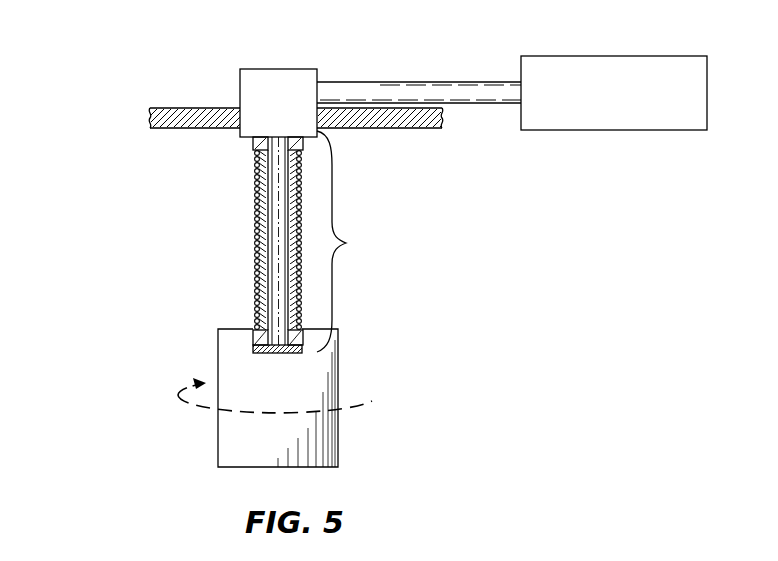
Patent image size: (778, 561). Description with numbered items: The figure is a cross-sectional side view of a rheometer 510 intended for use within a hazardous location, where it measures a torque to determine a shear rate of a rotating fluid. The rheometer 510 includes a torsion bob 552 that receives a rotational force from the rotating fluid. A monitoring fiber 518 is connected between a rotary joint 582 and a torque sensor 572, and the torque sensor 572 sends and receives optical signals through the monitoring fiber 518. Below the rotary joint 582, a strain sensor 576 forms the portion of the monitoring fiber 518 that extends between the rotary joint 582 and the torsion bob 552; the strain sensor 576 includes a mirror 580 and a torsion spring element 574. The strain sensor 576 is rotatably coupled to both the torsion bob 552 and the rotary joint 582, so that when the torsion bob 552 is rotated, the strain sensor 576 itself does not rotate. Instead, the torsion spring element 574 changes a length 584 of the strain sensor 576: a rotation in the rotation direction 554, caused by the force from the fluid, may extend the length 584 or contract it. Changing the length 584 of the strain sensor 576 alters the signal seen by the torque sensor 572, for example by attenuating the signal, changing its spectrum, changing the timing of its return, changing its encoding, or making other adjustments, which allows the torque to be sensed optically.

The rheometer 510 is at (357, 242).
The monitoring fiber 518 is at (415, 82).
The torsion bob 552 is at (232, 434).
The rotation direction 554 is at (372, 396).
The torque sensor 572 is at (590, 106).
The torsion spring element 574 is at (255, 200).
The strain sensor 576 is at (273, 240).
The mirror 580 is at (252, 348).
The rotary joint 582 is at (240, 85).
The length 584 is at (359, 241).